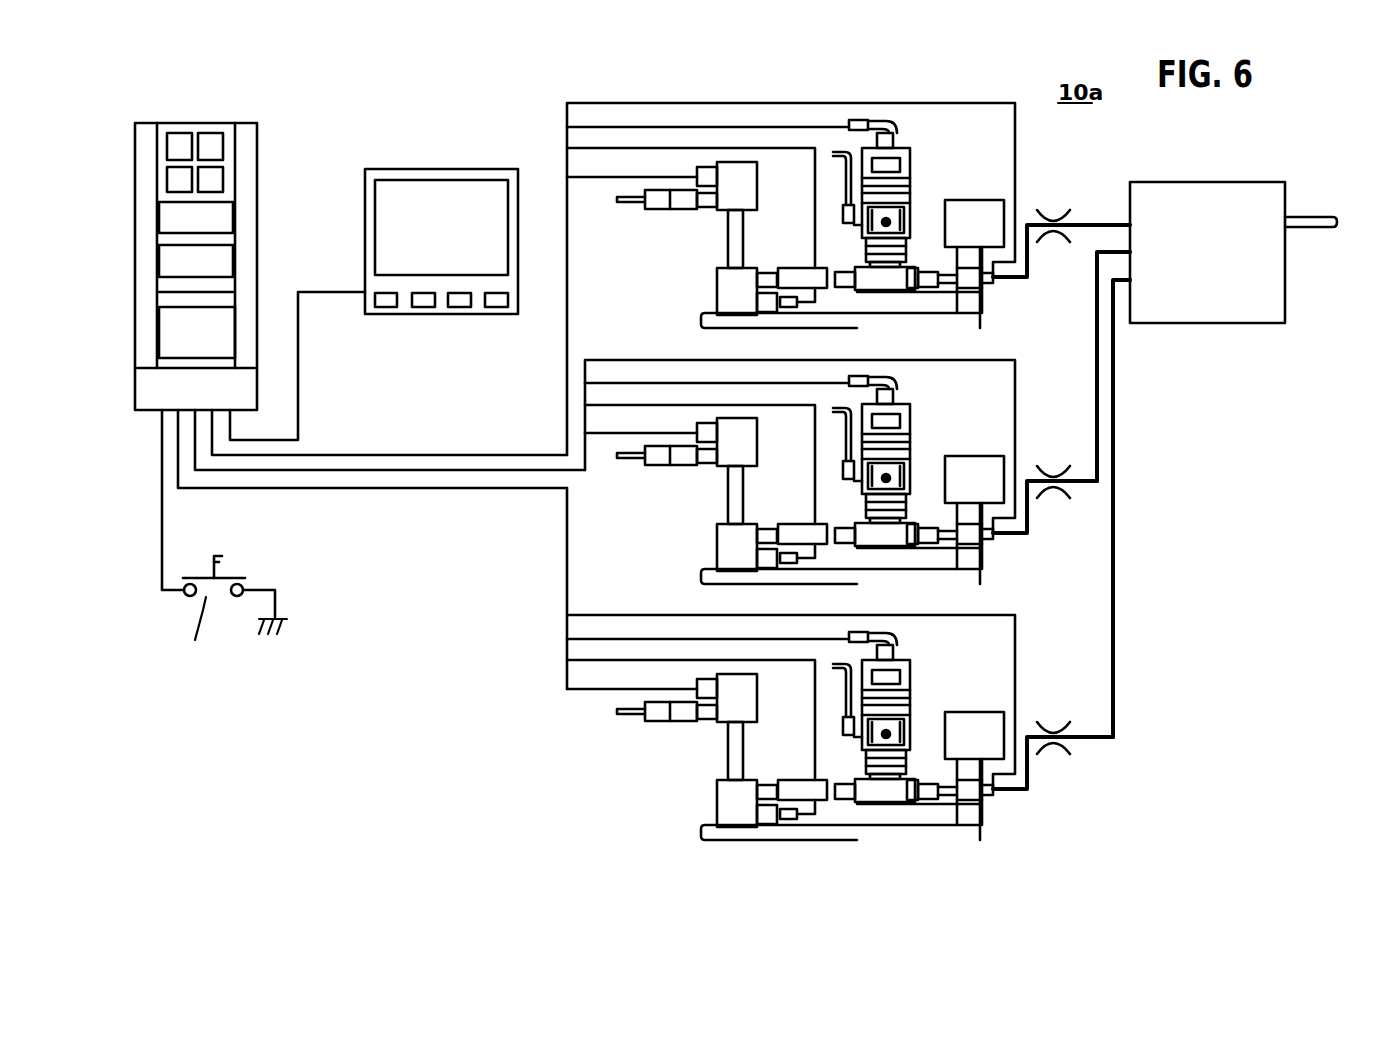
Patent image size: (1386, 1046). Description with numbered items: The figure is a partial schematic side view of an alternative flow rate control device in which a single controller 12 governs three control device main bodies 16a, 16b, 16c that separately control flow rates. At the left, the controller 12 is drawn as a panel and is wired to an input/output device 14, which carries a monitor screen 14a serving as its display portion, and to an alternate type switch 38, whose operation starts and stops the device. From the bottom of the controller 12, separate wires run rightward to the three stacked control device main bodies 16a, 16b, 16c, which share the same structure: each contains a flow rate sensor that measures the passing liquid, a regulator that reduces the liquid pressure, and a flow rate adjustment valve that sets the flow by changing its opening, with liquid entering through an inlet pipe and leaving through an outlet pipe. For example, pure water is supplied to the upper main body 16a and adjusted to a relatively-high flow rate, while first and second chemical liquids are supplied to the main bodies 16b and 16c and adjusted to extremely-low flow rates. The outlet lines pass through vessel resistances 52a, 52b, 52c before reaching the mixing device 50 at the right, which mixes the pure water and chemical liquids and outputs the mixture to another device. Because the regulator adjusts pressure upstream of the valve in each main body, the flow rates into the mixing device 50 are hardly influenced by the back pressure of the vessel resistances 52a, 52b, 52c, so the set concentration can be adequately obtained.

The controller 12 is at (257, 183).
The input/output device 14 is at (466, 221).
The monitor screen 14a is at (440, 195).
The control device main body 16a is at (939, 186).
The control device main body 16b is at (939, 443).
The control device main body 16c is at (939, 698).
The alternate type switch 38 is at (235, 612).
The mixing device 50 is at (1205, 325).
The vessel resistance 52a is at (1053, 213).
The vessel resistance 52b is at (1053, 469).
The vessel resistance 52c is at (1053, 725).